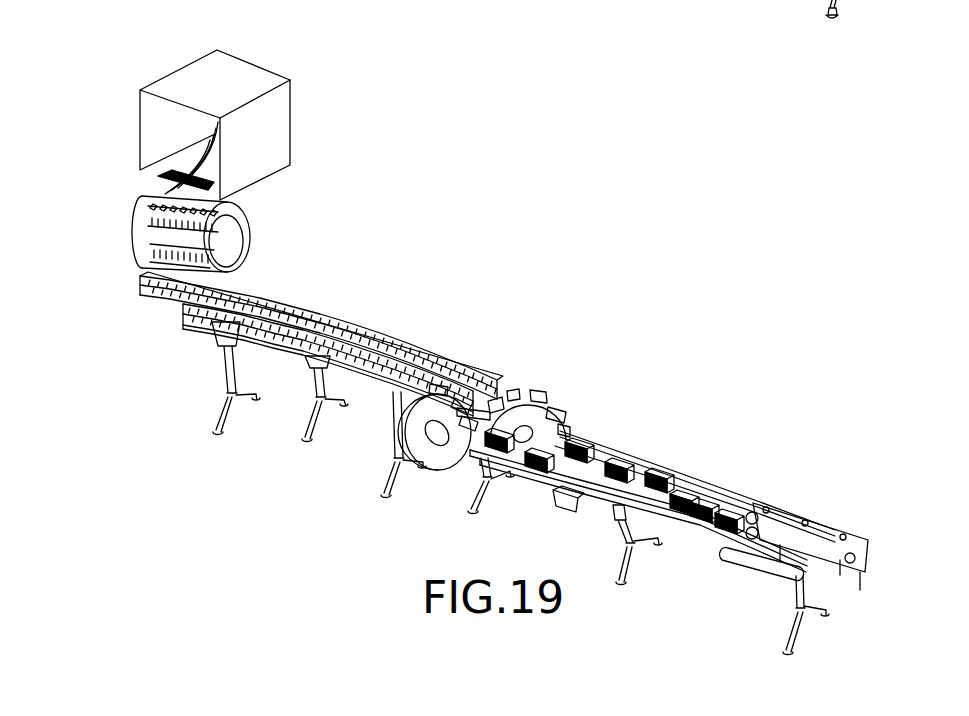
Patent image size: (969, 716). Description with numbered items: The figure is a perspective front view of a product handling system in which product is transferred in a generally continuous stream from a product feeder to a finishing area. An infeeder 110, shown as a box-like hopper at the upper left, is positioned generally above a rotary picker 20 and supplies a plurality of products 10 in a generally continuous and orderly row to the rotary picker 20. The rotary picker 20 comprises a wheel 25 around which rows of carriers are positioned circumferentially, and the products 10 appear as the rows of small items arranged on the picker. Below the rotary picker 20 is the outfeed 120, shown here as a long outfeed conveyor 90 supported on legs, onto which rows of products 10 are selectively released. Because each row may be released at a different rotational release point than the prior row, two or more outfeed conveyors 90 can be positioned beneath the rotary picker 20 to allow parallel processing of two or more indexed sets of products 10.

The product 10 is at (148, 208).
The rotary picker 20 is at (253, 213).
The wheel 25 is at (232, 250).
The outfeed conveyor 90 is at (250, 284).
The infeeder 110 is at (252, 72).
The outfeed 120 is at (140, 297).